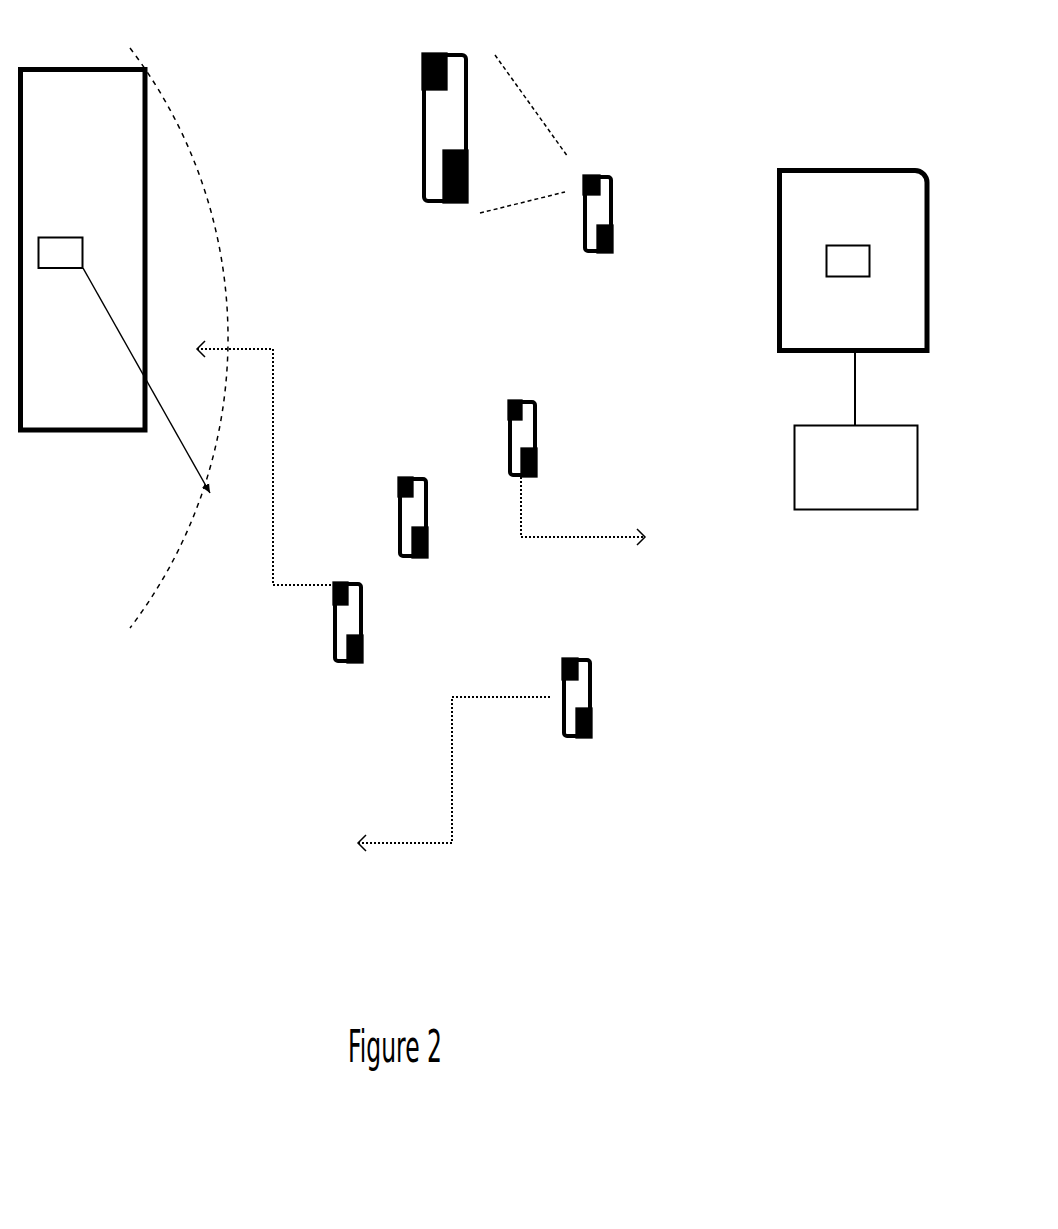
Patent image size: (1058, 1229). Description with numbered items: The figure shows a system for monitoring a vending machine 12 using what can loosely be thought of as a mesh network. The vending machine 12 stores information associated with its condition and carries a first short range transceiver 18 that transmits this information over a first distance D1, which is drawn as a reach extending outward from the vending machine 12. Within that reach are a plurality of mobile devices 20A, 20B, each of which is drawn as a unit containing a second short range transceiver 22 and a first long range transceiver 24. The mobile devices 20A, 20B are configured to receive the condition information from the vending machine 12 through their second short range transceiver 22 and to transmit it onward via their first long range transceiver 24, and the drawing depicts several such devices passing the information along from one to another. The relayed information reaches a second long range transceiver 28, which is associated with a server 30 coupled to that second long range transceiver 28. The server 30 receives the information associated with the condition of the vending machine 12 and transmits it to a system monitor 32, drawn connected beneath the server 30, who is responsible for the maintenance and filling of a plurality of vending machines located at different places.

The vending machine 12 is at (83, 250).
The first short range transceiver 18 is at (61, 253).
The first distance D1 is at (146, 388).
The mobile device 20A is at (473, 419).
The mobile device 20B is at (494, 395).
The second short range transceiver 22 is at (428, 68).
The first long range transceiver 24 is at (453, 165).
The second long range transceiver 28 is at (848, 261).
The server 30 is at (800, 170).
The system monitor 32 is at (793, 440).